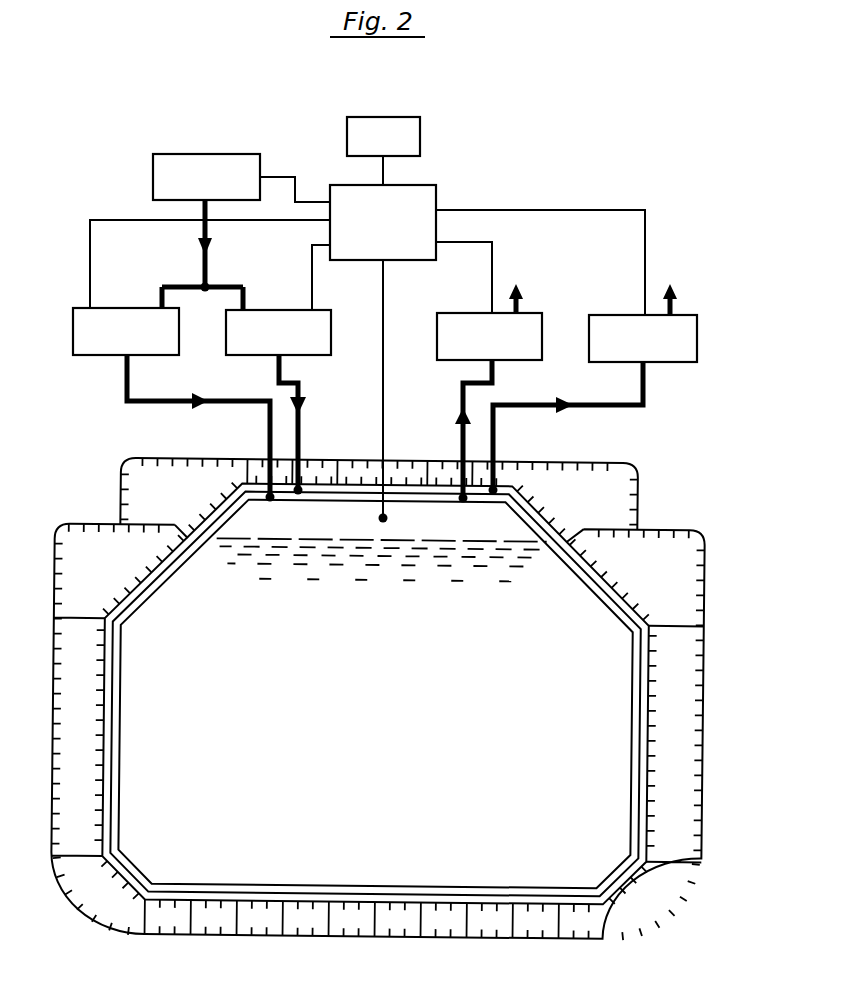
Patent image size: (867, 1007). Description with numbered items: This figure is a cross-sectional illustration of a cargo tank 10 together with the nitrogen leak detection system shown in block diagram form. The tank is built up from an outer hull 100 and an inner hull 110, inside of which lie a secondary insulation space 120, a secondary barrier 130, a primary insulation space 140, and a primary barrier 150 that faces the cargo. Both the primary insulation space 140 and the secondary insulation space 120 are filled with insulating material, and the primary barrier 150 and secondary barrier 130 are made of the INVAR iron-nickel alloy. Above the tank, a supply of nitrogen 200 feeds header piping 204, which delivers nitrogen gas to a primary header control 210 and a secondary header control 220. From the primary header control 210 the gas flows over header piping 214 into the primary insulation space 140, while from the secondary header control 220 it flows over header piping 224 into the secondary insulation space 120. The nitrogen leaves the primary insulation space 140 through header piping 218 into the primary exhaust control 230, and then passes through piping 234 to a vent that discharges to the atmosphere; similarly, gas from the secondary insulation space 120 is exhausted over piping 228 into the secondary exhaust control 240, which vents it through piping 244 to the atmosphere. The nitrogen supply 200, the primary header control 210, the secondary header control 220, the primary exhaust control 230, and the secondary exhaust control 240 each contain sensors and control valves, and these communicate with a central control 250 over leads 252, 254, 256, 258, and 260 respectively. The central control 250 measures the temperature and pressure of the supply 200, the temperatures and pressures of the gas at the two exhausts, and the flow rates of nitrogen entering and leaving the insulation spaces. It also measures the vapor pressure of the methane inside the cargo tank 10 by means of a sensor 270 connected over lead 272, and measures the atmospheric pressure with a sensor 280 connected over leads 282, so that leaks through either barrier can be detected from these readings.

The cargo tank 10 is at (392, 734).
The outer hull 100 is at (703, 699).
The inner hull 110 is at (656, 672).
The secondary insulation space 120 is at (622, 580).
The secondary barrier 130 is at (594, 597).
The primary insulation space 140 is at (620, 628).
The primary barrier 150 is at (632, 660).
The supply of nitrogen 200 is at (172, 154).
The header piping 204 is at (208, 262).
The primary header control 210 is at (73, 323).
The header piping 214 is at (158, 400).
The header piping 218 is at (460, 383).
The secondary header control 220 is at (331, 338).
The header piping 224 is at (301, 385).
The piping 228 is at (583, 398).
The primary exhaust control 230 is at (450, 313).
The piping 234 is at (520, 304).
The secondary exhaust control 240 is at (697, 343).
The piping 244 is at (674, 304).
The central control 250 is at (436, 197).
The lead 252 is at (293, 175).
The lead 254 is at (90, 222).
The lead 256 is at (312, 283).
The lead 258 is at (492, 257).
The lead 260 is at (645, 247).
The sensor 270 is at (387, 519).
The lead 272 is at (383, 433).
The sensor 280 is at (420, 117).
The leads 282 is at (383, 170).